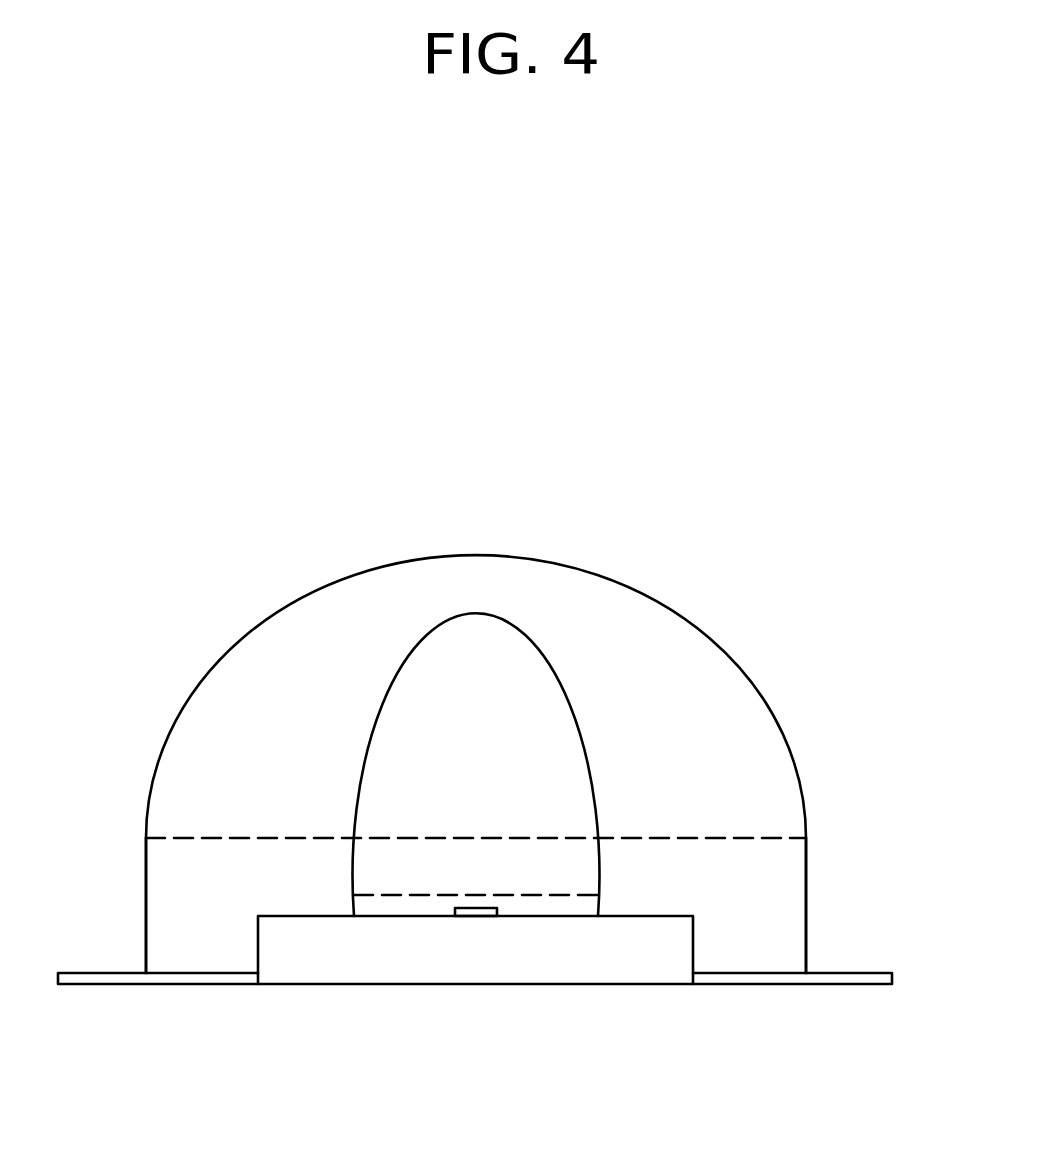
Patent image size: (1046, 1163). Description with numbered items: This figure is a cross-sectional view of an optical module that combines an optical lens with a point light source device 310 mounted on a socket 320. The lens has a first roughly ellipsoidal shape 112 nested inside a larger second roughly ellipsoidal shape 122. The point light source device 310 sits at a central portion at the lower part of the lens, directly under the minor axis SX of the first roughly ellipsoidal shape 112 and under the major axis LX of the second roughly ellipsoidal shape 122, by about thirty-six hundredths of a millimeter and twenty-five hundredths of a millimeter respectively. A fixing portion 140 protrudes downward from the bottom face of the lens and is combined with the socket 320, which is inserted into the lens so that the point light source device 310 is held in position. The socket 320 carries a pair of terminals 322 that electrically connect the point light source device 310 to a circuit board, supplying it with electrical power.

The second roughly ellipsoidal shape 122 is at (677, 610).
The first roughly ellipsoidal shape 112 is at (570, 707).
The major axis LX is at (763, 840).
The minor axis SX is at (570, 890).
The fixing portion 140 is at (780, 947).
The point light source device 310 is at (482, 912).
The socket 320 is at (643, 948).
The terminals 322 is at (843, 985).